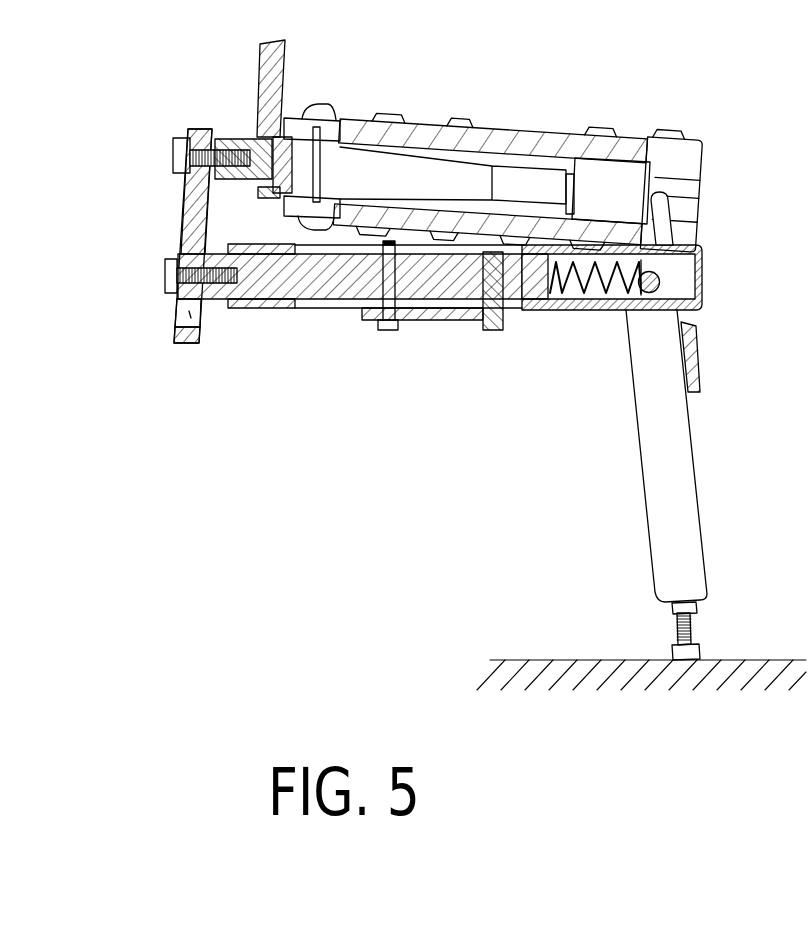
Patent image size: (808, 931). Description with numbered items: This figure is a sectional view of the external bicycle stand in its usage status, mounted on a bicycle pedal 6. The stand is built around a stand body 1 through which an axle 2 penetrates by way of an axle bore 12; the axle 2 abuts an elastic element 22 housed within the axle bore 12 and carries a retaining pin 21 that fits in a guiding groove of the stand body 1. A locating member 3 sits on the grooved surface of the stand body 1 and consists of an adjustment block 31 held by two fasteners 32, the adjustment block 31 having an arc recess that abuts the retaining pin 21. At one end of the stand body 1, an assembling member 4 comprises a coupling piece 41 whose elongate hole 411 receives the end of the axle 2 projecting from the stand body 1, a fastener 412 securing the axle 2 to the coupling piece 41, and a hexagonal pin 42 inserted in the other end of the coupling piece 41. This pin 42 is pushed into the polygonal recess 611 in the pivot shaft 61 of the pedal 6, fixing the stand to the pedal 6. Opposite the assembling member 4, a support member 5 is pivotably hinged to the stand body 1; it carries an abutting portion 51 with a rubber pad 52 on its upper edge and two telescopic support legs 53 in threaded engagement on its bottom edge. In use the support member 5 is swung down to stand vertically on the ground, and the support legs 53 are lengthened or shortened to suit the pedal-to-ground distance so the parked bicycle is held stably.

The stand body 1 is at (252, 306).
The axle 2 is at (335, 284).
The locating member 3 is at (459, 433).
The assembling member 4 is at (124, 157).
The support member 5 is at (693, 444).
The bicycle pedal 6 is at (486, 131).
The axle bore 12 is at (692, 281).
The retaining pin 21 is at (490, 332).
The elastic element 22 is at (591, 299).
The adjustment block 31 is at (437, 322).
The fasteners 32 is at (386, 332).
The coupling piece 41 is at (184, 206).
The pin 42 is at (238, 147).
The abutting portion 51 is at (653, 196).
The rubber pad 52 is at (646, 199).
The support legs 53 is at (694, 630).
The pivot shaft 61 is at (328, 160).
The elongate hole 411 is at (180, 318).
The fastener 412 is at (167, 275).
The polygonal recess 611 is at (281, 118).